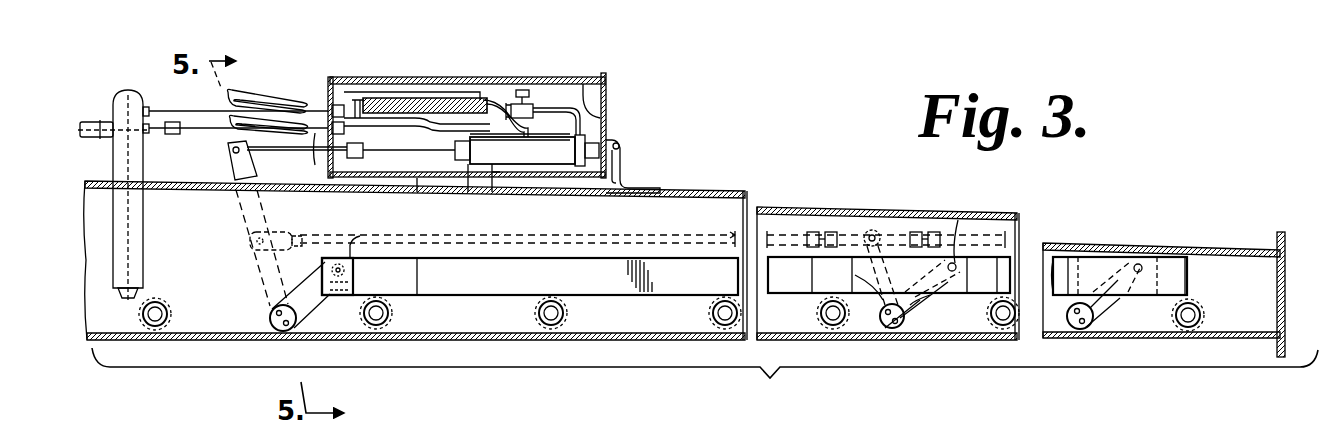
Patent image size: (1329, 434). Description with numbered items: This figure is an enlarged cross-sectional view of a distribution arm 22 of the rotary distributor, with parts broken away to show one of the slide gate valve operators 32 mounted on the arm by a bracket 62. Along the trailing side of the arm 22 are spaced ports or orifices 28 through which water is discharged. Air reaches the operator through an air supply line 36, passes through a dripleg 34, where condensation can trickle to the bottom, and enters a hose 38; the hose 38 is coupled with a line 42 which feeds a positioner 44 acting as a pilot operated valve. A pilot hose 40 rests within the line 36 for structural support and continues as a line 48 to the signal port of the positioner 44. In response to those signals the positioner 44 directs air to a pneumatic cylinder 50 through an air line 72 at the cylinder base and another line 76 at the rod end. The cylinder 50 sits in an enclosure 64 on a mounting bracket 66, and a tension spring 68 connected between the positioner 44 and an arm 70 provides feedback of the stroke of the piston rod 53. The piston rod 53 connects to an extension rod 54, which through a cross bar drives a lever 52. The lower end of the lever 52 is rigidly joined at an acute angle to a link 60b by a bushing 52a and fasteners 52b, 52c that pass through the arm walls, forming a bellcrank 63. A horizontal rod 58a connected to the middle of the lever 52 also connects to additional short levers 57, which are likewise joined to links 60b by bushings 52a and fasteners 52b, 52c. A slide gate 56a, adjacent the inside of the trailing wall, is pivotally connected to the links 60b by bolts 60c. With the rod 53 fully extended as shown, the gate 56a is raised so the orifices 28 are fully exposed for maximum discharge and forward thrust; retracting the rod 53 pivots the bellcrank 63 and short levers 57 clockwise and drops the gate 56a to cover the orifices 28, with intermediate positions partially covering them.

The distribution arm 22 is at (787, 206).
The ports or orifices 28 is at (558, 313).
The slide gate valve operator 32 is at (606, 74).
The dripleg 34 is at (143, 153).
The air supply line 36 is at (94, 120).
The hose 38 is at (165, 109).
The hose 40 is at (212, 136).
The line 42 is at (388, 77).
The positioner 44 is at (520, 88).
The line 48 is at (390, 122).
The pneumatic cylinder 50 is at (570, 172).
The lever 52 is at (245, 160).
The bushing 52a is at (270, 314).
The fastener 52b is at (930, 314).
The fastener 52c is at (890, 328).
The piston rod 53 is at (418, 192).
The extension rod 54 is at (270, 248).
The slide gate 56a is at (486, 296).
The short lever 57 is at (889, 275).
The horizontal rod 58a is at (665, 236).
The link 60b is at (1120, 312).
The bolt 60c is at (661, 224).
The bracket 62 is at (648, 192).
The bellcrank 63 is at (236, 220).
The enclosure 64 is at (424, 77).
The mounting bracket 66 is at (468, 191).
The tension spring 68 is at (490, 77).
The arm 70 is at (316, 158).
The air line 72 is at (600, 122).
The line 76 is at (514, 192).